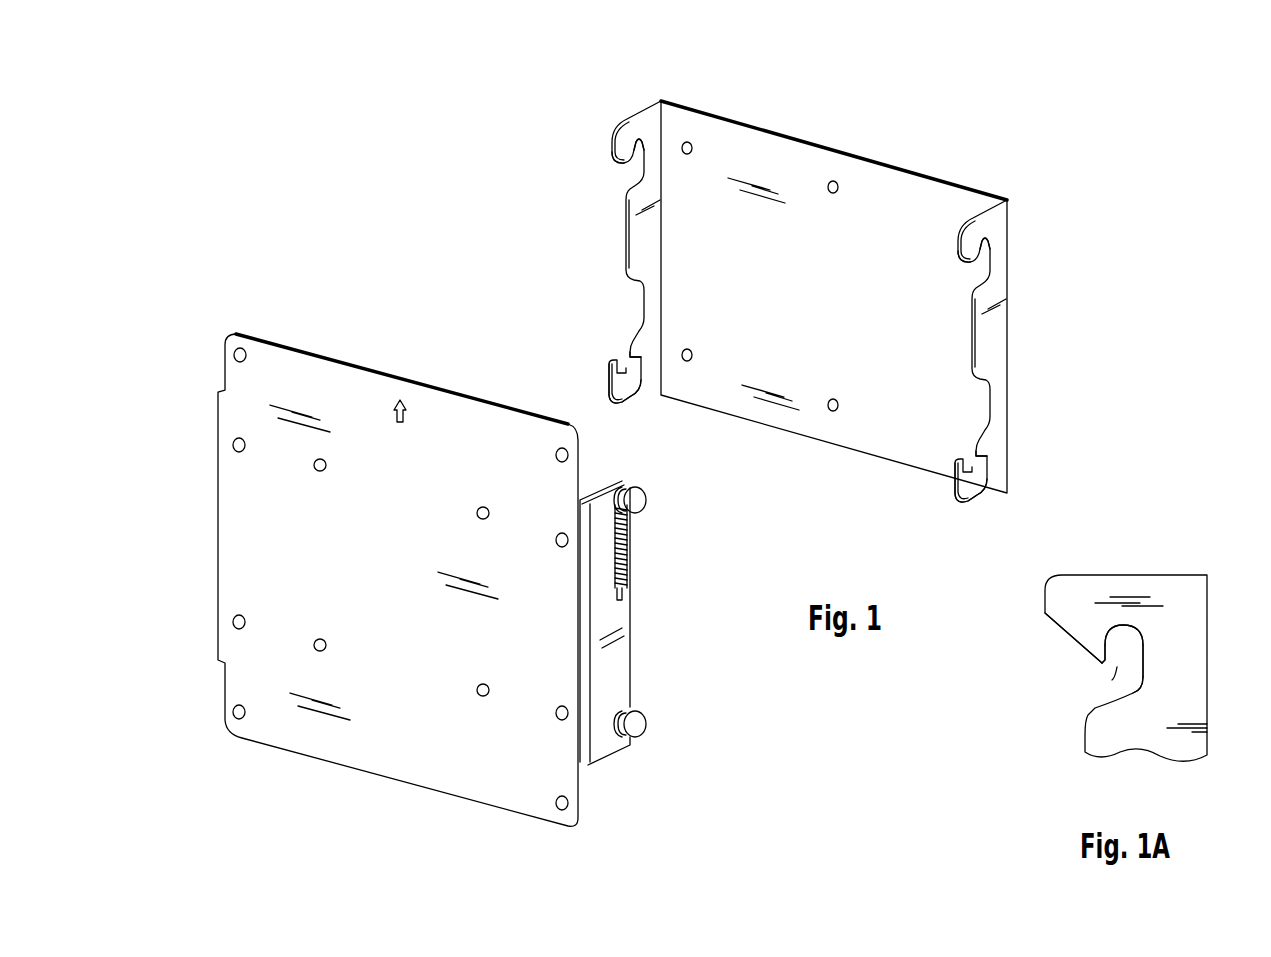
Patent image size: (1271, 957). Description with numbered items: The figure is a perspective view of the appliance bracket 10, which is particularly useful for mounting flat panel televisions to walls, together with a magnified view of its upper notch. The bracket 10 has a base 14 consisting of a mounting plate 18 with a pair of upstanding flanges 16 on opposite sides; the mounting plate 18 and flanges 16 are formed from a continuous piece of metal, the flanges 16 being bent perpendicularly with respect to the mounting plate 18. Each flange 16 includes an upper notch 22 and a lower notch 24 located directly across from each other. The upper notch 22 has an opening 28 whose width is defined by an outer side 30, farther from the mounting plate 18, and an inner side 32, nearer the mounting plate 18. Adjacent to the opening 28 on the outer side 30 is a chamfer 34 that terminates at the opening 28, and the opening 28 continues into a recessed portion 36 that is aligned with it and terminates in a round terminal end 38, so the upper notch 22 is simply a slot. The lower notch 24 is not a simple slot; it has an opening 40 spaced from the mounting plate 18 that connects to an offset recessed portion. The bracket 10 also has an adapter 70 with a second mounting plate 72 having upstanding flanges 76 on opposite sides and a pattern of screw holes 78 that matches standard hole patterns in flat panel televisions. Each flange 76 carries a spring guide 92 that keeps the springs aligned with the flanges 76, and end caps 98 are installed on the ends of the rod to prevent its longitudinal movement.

In FIG. 1, the appliance bracket 10 is at (352, 136).
In FIG. 1, the base 14 is at (866, 158).
In FIG. 1, the upstanding flanges 16 is at (640, 237).
In FIG. 1, the mounting plate 18 is at (757, 150).
In FIG. 1, the upper notch 22 is at (636, 150).
In FIG. 1A, the upper notch 22 is at (1130, 667).
In FIG. 1, the lower notch 24 is at (615, 373).
In FIG. 1A, the opening 28 is at (1117, 667).
In FIG. 1A, the outer side 30 is at (1102, 663).
In FIG. 1A, the inner side 32 is at (1145, 670).
In FIG. 1, the chamfer 34 is at (623, 162).
In FIG. 1A, the chamfer 34 is at (1067, 643).
In FIG. 1A, the recessed portion 36 is at (1148, 653).
In FIG. 1A, the round terminal end 38 is at (1123, 627).
In FIG. 1, the opening 40 is at (627, 350).
In FIG. 1, the adapter 70 is at (250, 320).
In FIG. 1, the second mounting plate 72 is at (338, 388).
In FIG. 1, the upstanding flanges 76 is at (616, 662).
In FIG. 1, the screw holes 78 is at (328, 467).
In FIG. 1, the spring guide 92 is at (622, 592).
In FIG. 1, the end caps 98 is at (645, 500).